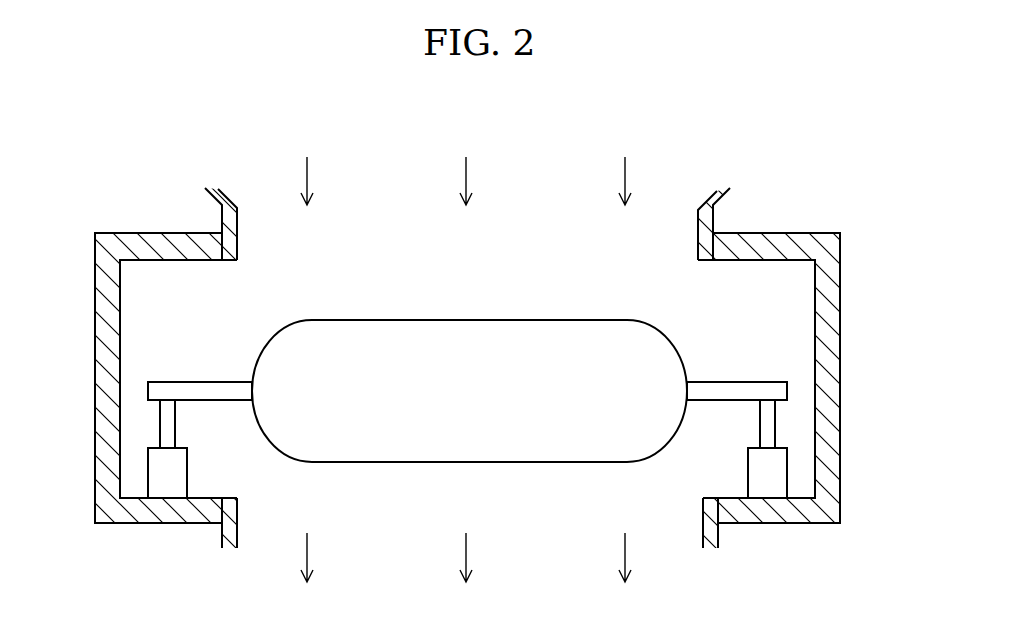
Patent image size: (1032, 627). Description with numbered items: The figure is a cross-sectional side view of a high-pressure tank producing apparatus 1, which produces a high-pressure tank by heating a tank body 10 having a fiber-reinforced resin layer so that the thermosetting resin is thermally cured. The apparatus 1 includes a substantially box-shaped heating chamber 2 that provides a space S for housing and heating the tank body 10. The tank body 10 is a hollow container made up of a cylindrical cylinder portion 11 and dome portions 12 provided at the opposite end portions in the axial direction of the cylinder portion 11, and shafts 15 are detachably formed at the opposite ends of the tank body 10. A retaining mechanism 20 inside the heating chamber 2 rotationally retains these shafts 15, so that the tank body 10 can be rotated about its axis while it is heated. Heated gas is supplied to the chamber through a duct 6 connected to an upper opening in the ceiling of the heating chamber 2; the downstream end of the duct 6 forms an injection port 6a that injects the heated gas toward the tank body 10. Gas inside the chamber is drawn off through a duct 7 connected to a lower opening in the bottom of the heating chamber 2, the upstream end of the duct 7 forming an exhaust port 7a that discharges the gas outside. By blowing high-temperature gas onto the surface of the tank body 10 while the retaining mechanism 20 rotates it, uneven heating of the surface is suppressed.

The high-pressure tank producing apparatus 1 is at (817, 158).
The heating chamber 2 is at (826, 291).
The duct 6 is at (707, 225).
The injection port 6a is at (455, 276).
The duct 7 is at (710, 545).
The exhaust port 7a is at (571, 502).
The tank body 10 is at (463, 351).
The cylinder portion 11 is at (487, 320).
The dome portion 12 is at (275, 333).
The shaft 15 is at (193, 385).
The retaining mechanism 20 is at (778, 458).
The space S is at (133, 353).